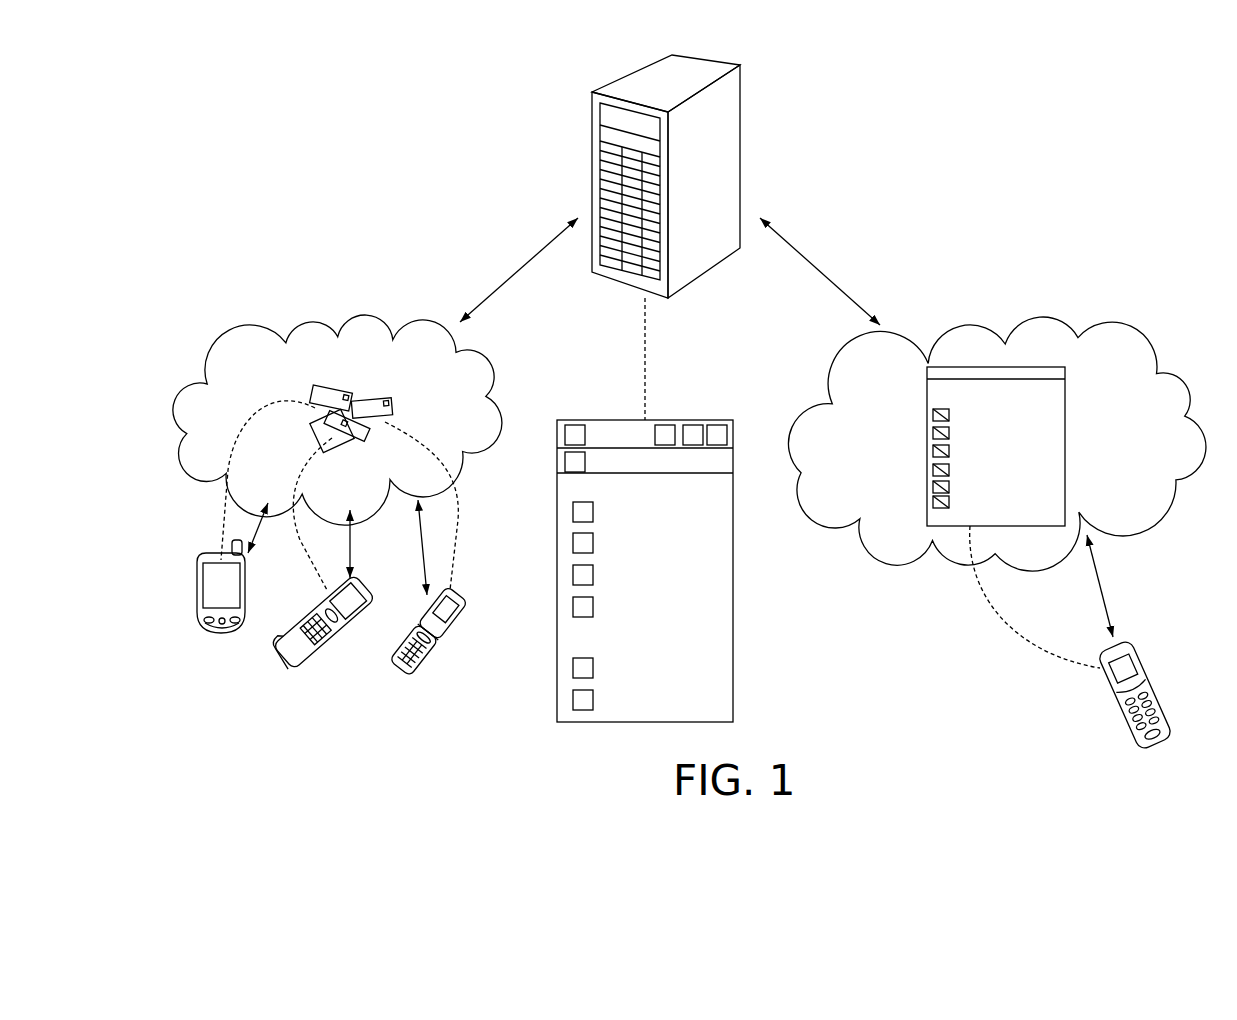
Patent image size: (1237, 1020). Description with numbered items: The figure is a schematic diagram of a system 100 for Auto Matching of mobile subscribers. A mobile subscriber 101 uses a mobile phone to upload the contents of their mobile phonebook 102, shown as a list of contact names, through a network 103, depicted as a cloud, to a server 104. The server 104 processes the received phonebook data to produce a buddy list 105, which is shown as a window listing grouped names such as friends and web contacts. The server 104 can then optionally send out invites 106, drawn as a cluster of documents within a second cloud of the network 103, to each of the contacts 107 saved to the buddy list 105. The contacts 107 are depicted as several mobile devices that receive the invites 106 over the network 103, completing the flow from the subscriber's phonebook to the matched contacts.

The system 100 is at (1125, 151).
The mobile subscriber 101 is at (1150, 673).
The mobile phonebook 102 is at (998, 366).
The network 103 is at (363, 330).
The server 104 is at (737, 118).
The buddy list 105 is at (733, 508).
The invites 106 is at (315, 386).
The contacts 107 is at (228, 640).